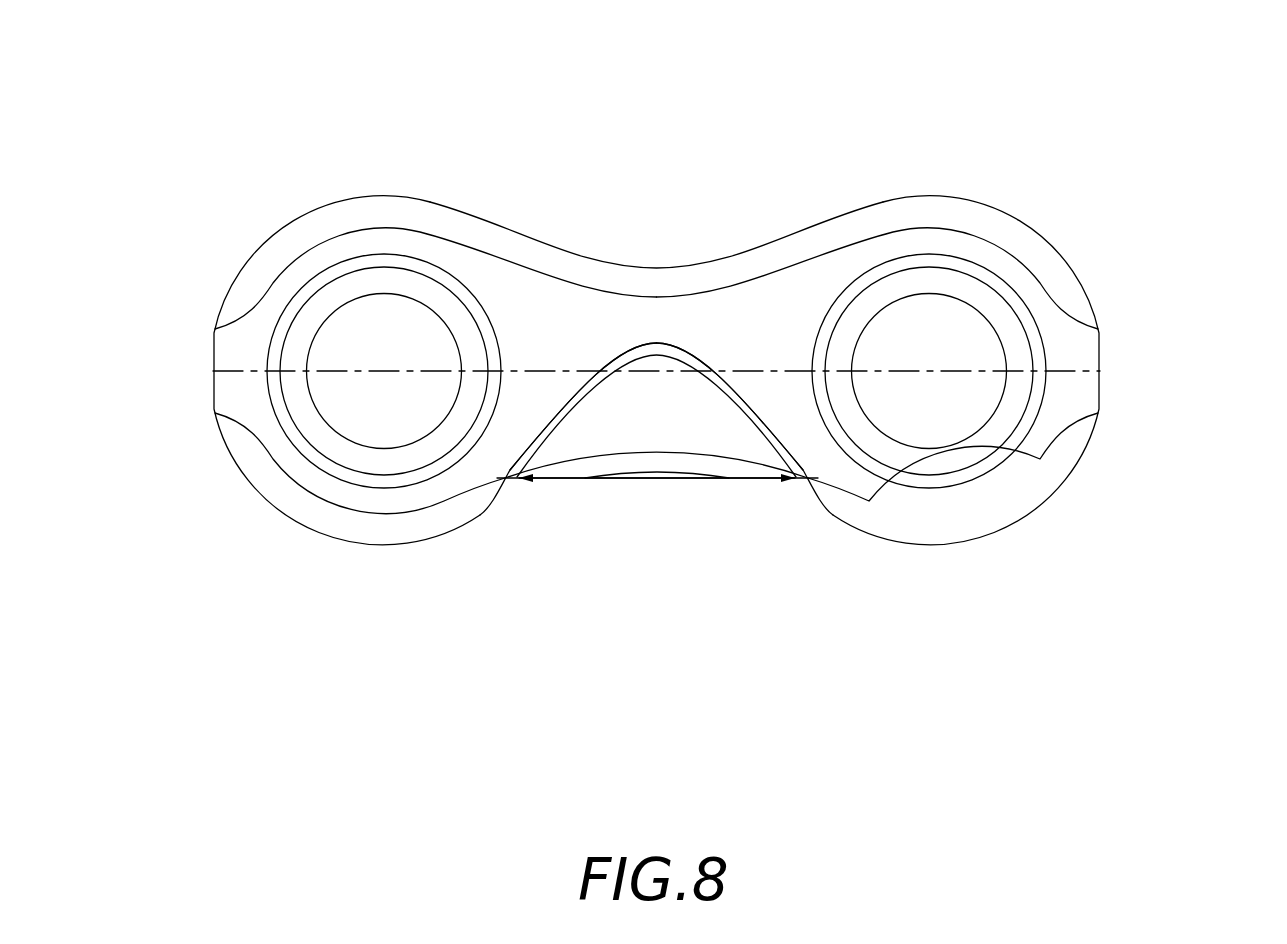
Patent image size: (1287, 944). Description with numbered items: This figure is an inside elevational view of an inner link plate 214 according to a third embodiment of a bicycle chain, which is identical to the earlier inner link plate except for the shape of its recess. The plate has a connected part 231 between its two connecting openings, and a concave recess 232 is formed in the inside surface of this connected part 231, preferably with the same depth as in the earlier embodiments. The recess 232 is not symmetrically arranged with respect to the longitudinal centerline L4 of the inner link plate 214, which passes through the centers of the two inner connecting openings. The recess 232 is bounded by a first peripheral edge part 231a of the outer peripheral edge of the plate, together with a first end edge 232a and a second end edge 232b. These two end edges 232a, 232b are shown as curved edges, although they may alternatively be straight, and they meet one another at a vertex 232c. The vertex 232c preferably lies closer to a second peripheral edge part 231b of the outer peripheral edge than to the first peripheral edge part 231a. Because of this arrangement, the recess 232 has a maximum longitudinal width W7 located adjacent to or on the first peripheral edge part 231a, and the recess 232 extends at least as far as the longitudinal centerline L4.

The inner link plate 214 is at (766, 203).
The connected part 231 is at (727, 447).
The first peripheral edge part 231a is at (680, 480).
The second peripheral edge part 231b is at (682, 268).
The concave recess 232 is at (650, 418).
The first end edge 232a is at (543, 427).
The second end edge 232b is at (770, 427).
The vertex 232c is at (656, 341).
The maximum longitudinal width W7 is at (653, 480).
The longitudinal centerline L4 is at (1068, 371).